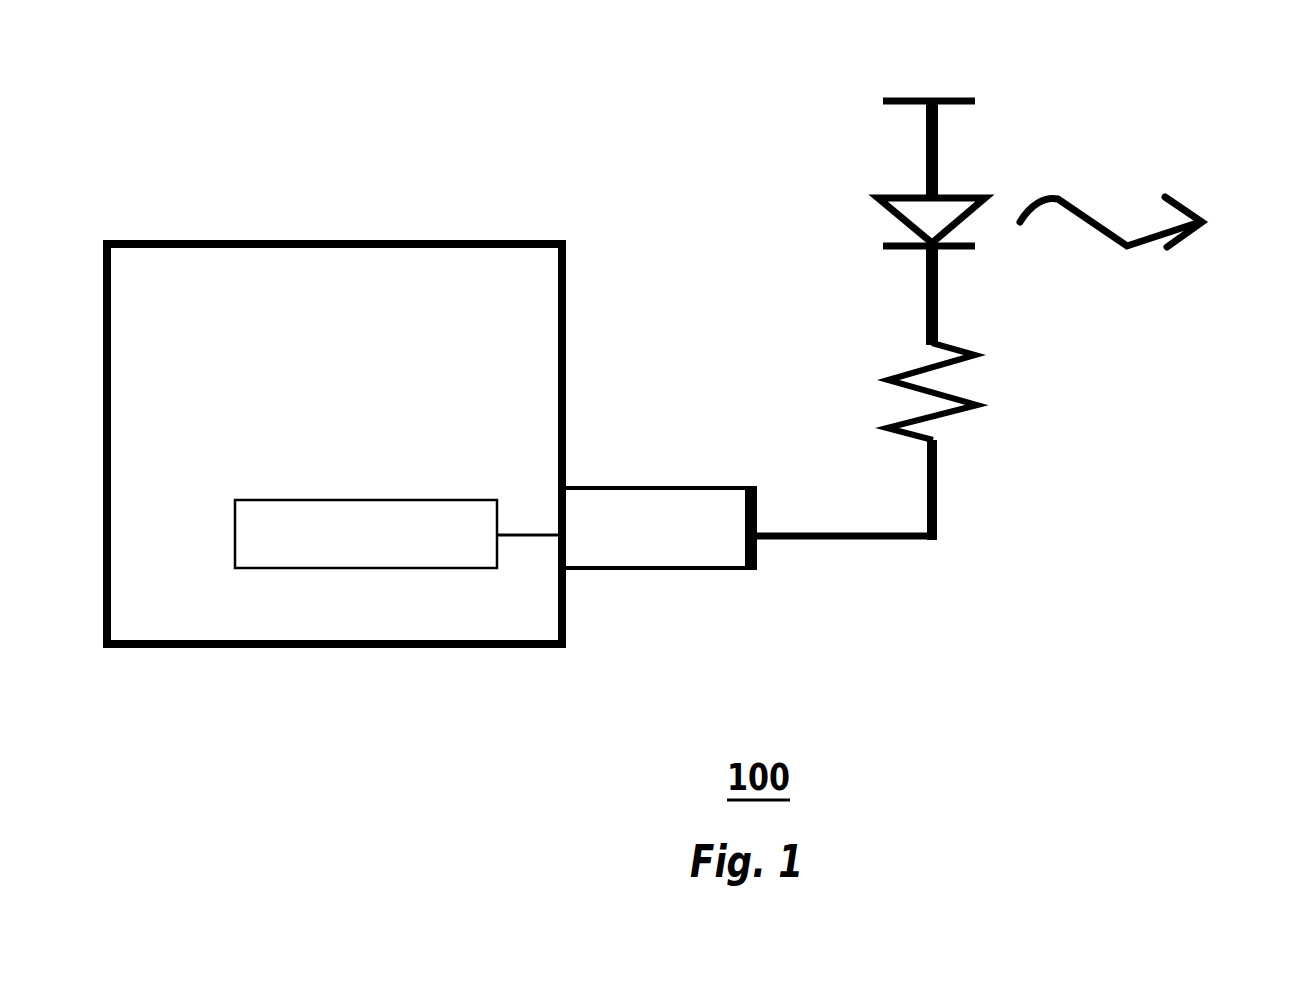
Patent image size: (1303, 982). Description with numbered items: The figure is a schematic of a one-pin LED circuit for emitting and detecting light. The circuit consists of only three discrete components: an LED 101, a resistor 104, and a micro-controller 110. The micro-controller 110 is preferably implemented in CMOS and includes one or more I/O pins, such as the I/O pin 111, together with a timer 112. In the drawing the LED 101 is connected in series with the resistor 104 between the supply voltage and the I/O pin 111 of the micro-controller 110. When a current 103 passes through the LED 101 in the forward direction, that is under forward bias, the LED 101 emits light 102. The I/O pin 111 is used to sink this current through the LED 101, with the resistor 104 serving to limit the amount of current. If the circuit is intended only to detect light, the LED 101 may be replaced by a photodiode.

The LED 101 is at (907, 197).
The light 102 is at (1117, 243).
The current 103 is at (938, 135).
The resistor 104 is at (933, 423).
The micro-controller 110 is at (267, 650).
The I/O pin 111 is at (665, 570).
The timer 112 is at (353, 498).